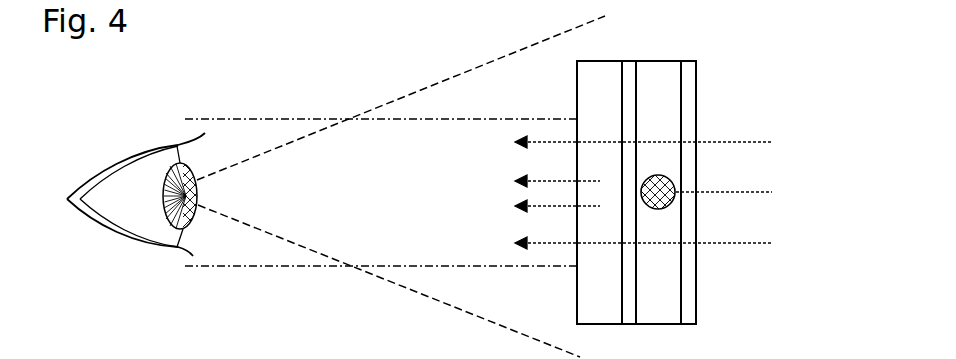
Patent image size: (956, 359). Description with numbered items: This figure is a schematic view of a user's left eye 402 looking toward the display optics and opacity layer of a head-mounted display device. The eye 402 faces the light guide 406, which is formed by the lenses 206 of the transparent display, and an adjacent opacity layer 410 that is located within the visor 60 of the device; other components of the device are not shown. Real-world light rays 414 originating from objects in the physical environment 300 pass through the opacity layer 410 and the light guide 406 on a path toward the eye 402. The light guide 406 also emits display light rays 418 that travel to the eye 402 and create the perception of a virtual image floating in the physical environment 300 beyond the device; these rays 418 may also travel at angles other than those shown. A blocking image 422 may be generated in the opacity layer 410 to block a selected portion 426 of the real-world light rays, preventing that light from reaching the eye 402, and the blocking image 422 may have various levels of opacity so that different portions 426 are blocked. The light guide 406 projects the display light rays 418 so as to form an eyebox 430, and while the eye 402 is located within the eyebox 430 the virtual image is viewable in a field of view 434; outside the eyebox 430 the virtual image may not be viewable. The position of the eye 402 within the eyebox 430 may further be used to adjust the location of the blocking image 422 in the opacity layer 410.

The left eye 402 is at (122, 139).
The eyebox 430 is at (287, 117).
The field of view 434 is at (393, 100).
The visor 60 is at (664, 50).
The opacity layer 410 is at (673, 72).
The lenses 206 is at (577, 290).
The light guide 406 is at (589, 324).
The real-world light rays 414 is at (714, 141).
The display light rays 418 is at (536, 180).
The selected portion of real-world light rays 426 is at (724, 192).
The blocking image 422 is at (665, 212).
The physical environment 300 is at (841, 147).